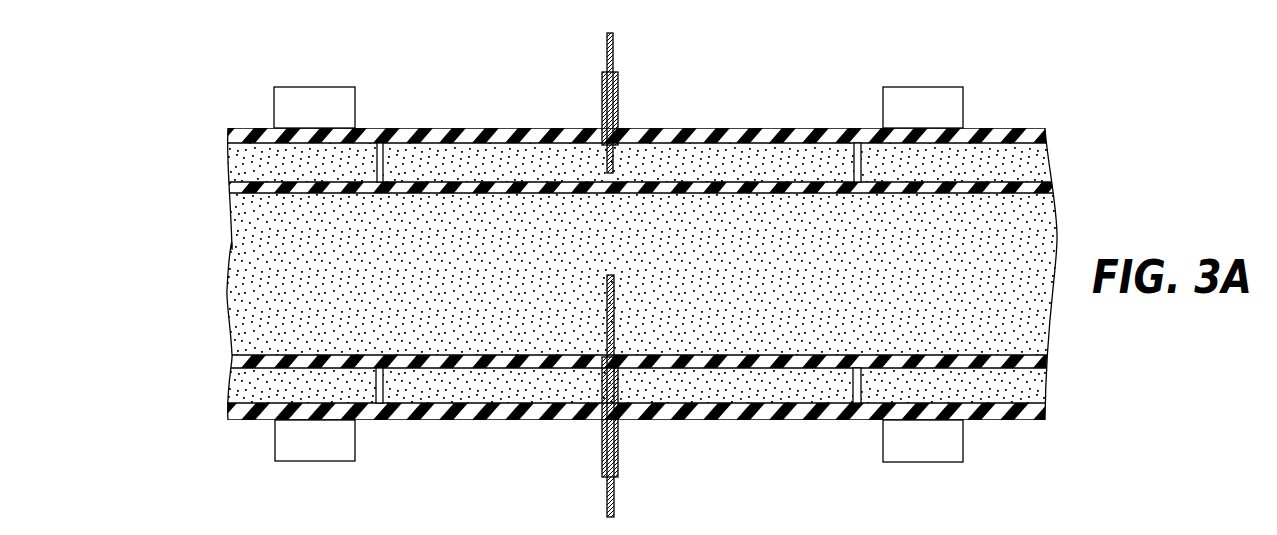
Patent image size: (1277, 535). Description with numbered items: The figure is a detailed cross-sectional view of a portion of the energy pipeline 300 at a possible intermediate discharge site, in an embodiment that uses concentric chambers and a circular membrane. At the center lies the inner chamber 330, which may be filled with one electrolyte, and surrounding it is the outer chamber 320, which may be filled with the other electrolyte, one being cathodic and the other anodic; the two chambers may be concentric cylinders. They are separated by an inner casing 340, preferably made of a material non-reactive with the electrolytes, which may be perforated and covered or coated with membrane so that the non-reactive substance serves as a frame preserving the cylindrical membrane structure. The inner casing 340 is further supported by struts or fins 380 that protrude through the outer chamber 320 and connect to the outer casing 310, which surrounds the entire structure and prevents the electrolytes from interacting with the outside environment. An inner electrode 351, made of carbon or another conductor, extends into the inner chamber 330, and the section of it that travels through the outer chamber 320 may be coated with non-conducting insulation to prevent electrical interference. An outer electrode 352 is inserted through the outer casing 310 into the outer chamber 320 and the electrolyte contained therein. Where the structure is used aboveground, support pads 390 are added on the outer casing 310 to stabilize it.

The energy pipeline 300 is at (1042, 80).
The outer casing 310 is at (845, 127).
The outer chamber 320 is at (680, 162).
The inner chamber 330 is at (1027, 220).
The inner casing 340 is at (520, 187).
The inner electrode 351 is at (614, 318).
The outer electrode 352 is at (613, 60).
The struts or fins 380 is at (380, 158).
The support pads 390 is at (315, 88).